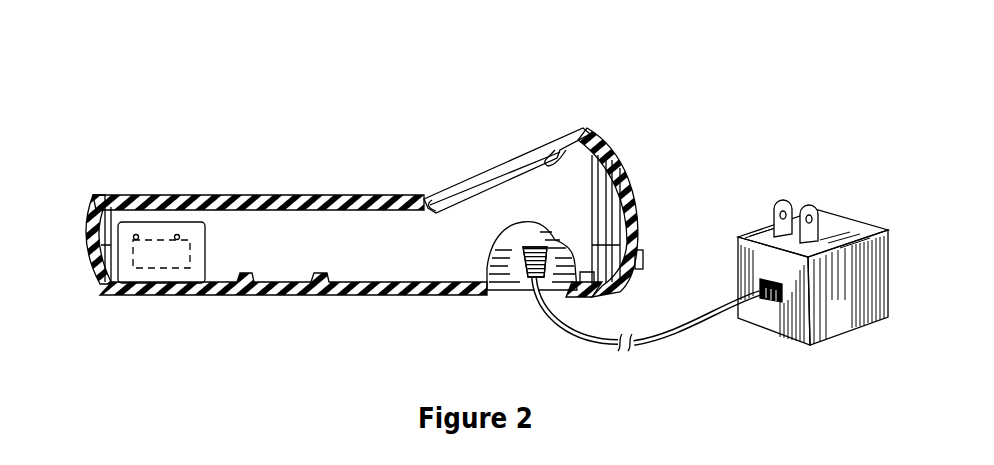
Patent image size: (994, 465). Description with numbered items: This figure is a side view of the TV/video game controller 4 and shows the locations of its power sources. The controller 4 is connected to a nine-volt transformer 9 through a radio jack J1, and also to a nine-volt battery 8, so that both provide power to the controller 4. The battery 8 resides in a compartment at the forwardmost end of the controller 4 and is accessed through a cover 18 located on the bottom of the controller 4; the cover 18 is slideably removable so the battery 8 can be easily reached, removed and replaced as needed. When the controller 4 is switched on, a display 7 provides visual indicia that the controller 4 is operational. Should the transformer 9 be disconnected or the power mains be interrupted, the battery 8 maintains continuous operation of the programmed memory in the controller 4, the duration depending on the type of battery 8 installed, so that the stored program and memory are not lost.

The controller 4 is at (283, 106).
The display 7 is at (490, 165).
The battery 8 is at (168, 240).
The cover 18 is at (171, 292).
The radio jack J1 is at (495, 293).
The transformer 9 is at (840, 227).